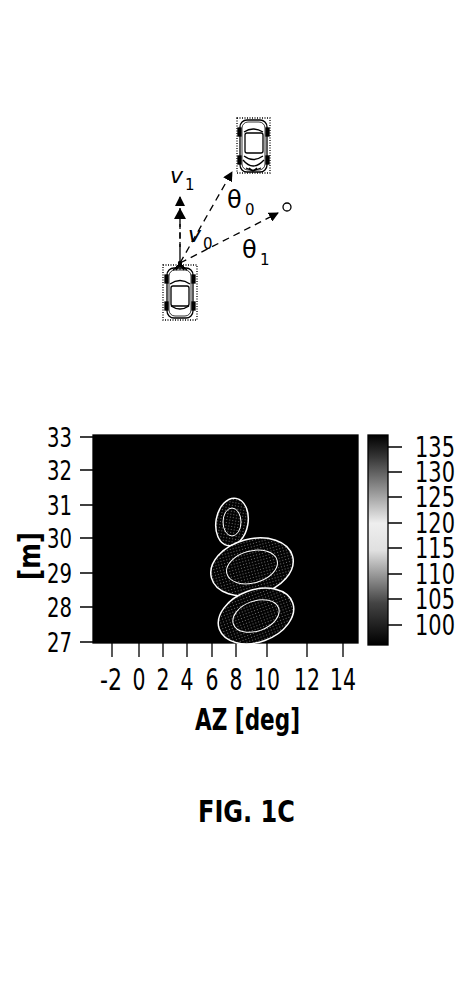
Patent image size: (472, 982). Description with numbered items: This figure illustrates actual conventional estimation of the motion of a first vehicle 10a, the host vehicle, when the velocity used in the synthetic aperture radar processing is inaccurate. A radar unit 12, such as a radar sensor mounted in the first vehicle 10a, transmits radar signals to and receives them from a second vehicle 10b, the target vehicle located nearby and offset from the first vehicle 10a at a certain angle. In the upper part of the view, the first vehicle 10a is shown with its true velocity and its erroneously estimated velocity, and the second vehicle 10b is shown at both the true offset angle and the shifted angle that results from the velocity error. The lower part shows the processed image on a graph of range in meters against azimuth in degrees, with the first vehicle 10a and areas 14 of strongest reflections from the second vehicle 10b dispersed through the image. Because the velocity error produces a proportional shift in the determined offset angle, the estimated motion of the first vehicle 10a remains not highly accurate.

The first vehicle 10a is at (178, 262).
The second vehicle 10b is at (254, 118).
The radar unit 12 is at (185, 266).
The areas with strongest reflections 14 is at (250, 503).